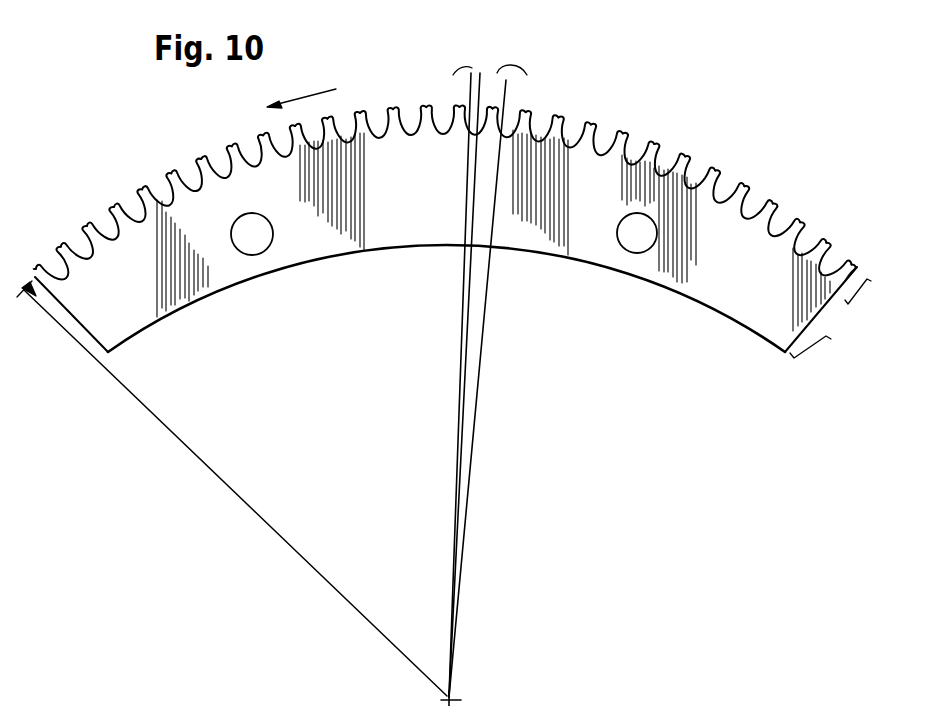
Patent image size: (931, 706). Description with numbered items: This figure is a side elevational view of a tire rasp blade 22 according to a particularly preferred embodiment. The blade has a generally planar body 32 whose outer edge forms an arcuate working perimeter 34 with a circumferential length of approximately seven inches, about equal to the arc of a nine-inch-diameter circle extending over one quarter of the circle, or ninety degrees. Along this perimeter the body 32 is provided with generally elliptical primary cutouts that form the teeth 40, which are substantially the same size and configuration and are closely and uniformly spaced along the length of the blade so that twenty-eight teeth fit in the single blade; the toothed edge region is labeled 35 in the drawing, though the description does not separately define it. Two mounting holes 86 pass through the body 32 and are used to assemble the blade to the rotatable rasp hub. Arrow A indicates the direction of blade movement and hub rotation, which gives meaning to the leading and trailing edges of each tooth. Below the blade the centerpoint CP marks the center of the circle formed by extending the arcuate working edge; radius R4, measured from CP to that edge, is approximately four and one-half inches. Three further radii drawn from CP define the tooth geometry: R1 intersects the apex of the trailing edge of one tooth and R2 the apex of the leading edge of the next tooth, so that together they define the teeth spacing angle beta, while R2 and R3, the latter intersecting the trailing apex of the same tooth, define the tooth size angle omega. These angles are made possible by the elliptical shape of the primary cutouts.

The tire rasp blade 22 is at (441, 209).
The teeth 35 is at (600, 108).
The teeth 40 is at (331, 124).
The mounting holes 86 is at (268, 247).
The body 32 is at (792, 358).
The working perimeter 34 is at (850, 301).
The radius R1 is at (462, 306).
The radius R2 is at (470, 341).
The radius R3 is at (490, 282).
The radius R4 is at (267, 523).
The centerpoint CP is at (453, 697).
The arrow A is at (301, 90).